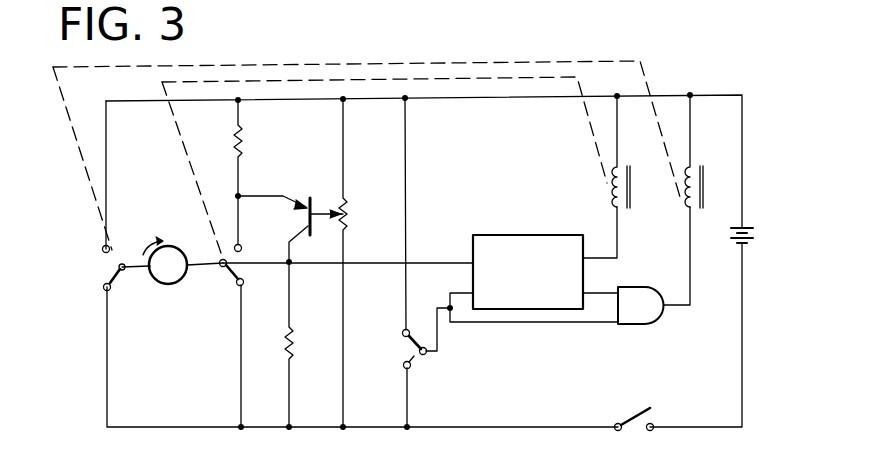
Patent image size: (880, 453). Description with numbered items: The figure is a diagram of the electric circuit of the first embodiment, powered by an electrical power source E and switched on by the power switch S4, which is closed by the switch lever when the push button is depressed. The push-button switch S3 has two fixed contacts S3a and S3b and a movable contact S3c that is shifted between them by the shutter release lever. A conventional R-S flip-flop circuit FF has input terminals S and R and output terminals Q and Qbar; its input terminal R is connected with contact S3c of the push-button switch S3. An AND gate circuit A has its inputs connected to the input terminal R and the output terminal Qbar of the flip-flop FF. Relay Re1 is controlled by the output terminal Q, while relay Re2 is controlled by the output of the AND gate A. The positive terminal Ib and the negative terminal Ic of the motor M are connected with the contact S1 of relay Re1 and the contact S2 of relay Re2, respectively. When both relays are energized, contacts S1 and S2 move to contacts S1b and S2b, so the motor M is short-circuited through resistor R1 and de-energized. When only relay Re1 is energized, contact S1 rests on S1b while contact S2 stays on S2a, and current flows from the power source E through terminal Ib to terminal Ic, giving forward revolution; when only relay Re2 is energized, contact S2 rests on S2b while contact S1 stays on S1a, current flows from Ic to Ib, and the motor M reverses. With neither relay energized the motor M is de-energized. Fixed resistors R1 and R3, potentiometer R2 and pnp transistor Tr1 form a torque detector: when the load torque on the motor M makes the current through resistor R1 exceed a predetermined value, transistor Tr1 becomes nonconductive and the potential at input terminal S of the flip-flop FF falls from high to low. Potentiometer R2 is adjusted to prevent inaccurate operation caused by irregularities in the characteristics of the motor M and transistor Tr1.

The contact of relay Re1 S1 is at (241, 266).
The switch contact S1a is at (238, 284).
The switch contact S1b is at (235, 242).
The contact of relay Re2 S2 is at (118, 269).
The switch contact S2a is at (102, 290).
The switch contact S2b is at (102, 245).
The push-button switch S3 is at (422, 344).
The fixed contact of push-button switch S3a is at (404, 330).
The fixed contact of push-button switch S3b is at (404, 367).
The movable contact of push-button switch S3c is at (425, 354).
The power switch S4 is at (638, 416).
The fixed resistor R1 is at (244, 140).
The potentiometer R2 is at (348, 212).
The fixed resistor R3 is at (294, 332).
The pnp transistor Tr1 is at (301, 208).
The positive terminal of the motor Ib is at (218, 258).
The negative terminal of the motor Ic is at (127, 272).
The motor M is at (183, 260).
The R-S flip-flop circuit FF is at (513, 234).
The input terminal S-bar S is at (472, 262).
The input terminal R-bar R is at (472, 290).
The output terminal Q is at (589, 258).
The output terminal Q-bar Qbar is at (586, 291).
The relay Re1 is at (612, 200).
The relay Re2 is at (687, 202).
The AND gate circuit A is at (662, 316).
The electrical power source E is at (732, 242).